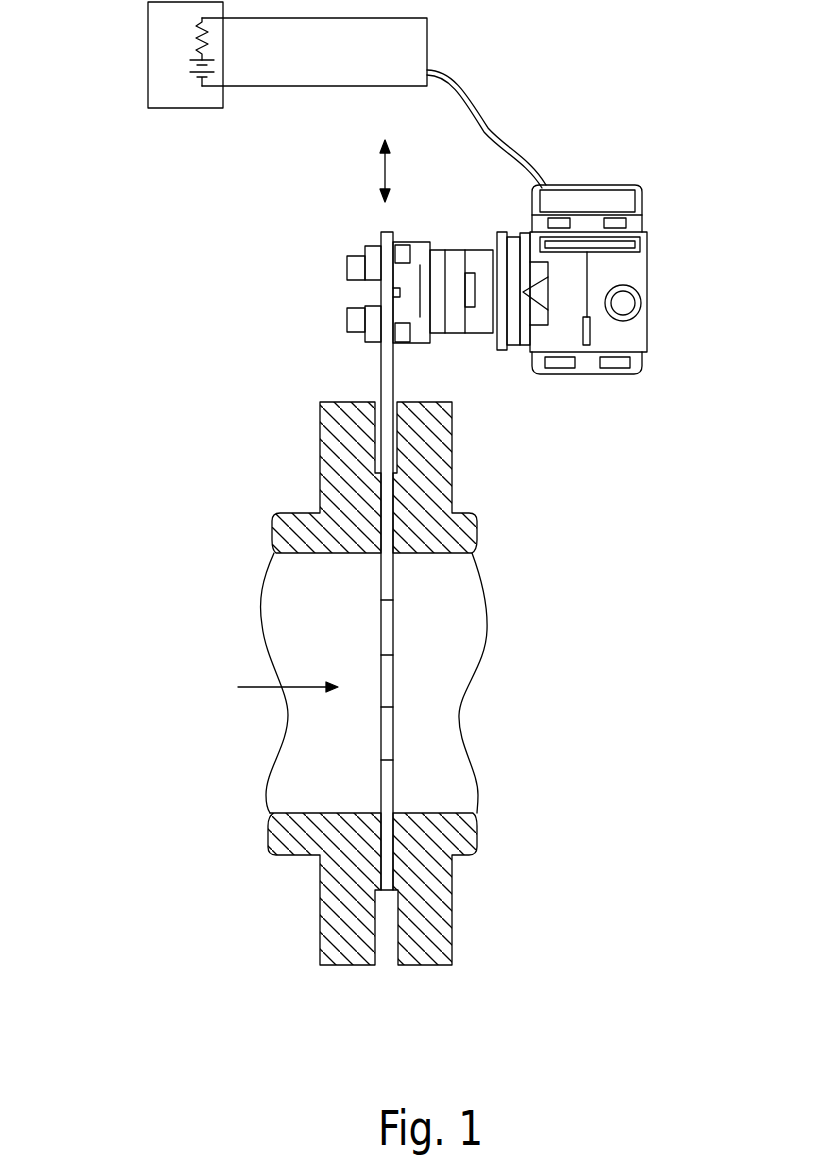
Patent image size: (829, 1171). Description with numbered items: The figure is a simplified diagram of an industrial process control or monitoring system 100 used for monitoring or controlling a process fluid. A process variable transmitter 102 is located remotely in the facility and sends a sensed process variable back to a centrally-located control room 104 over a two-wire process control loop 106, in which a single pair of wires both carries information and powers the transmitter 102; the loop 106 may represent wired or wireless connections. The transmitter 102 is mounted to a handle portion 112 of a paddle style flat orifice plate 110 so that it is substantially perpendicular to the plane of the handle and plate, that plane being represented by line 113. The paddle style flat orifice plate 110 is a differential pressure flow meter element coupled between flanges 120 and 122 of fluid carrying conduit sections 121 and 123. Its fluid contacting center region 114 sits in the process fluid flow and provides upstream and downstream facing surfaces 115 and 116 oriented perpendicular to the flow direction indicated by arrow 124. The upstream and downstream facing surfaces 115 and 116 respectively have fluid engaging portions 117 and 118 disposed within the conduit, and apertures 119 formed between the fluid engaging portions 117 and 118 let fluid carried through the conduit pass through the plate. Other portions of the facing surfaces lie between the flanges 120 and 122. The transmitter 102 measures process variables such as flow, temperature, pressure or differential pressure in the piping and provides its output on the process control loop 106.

The industrial process control or monitoring system 100 is at (616, 86).
The process variable transmitter 102 is at (647, 273).
The control room 104 is at (148, 43).
The two-wire process control loop 106 is at (282, 20).
The paddle style flat orifice plate 110 is at (414, 573).
The handle portion 112 is at (387, 362).
The line representing plane 113 is at (388, 176).
The center region 114 is at (390, 668).
The upstream facing surface 115 is at (380, 795).
The downstream facing surface 116 is at (395, 795).
The fluid engaging portion 117 is at (381, 684).
The fluid engaging portion 118 is at (395, 687).
The apertures 119 is at (387, 625).
The flange 120 is at (358, 958).
The fluid carrying conduit section 121 is at (307, 869).
The flange 122 is at (427, 957).
The fluid carrying conduit section 123 is at (466, 872).
The arrow 124 is at (263, 688).